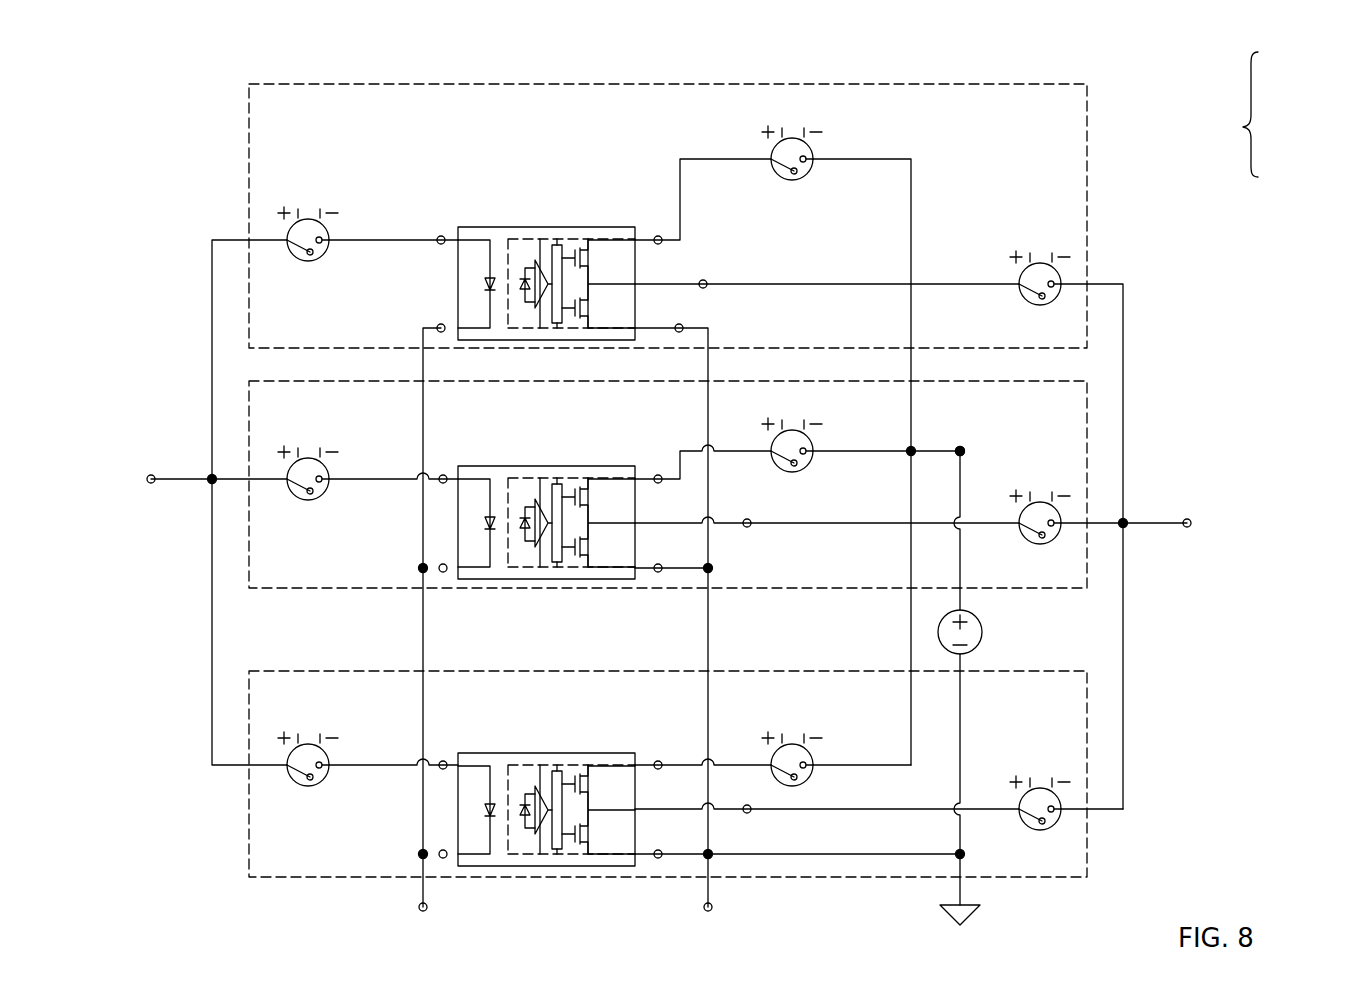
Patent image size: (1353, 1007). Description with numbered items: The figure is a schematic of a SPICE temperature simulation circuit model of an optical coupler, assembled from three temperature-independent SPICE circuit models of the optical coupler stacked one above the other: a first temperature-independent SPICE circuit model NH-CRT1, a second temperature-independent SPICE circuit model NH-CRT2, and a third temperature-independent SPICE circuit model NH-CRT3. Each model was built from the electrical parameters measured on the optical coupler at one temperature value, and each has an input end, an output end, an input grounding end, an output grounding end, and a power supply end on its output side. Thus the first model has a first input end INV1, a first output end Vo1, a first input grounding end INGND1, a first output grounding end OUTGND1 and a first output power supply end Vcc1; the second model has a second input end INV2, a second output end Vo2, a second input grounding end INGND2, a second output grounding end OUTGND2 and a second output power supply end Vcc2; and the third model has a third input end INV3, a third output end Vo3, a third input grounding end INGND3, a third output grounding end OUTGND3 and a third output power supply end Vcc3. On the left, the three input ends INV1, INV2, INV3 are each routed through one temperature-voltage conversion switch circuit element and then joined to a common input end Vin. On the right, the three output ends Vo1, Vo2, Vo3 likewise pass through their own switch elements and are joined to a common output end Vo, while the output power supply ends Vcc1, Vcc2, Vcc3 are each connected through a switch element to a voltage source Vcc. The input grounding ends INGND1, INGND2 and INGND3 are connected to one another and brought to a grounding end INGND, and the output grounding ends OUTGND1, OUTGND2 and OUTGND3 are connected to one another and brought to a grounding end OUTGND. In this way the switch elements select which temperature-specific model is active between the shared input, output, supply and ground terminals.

The first temperature-independent SPICE circuit model NH-CRT1 is at (543, 226).
The second temperature-independent SPICE circuit model NH-CRT2 is at (540, 465).
The third temperature-independent SPICE circuit model NH-CRT3 is at (530, 752).
The first input end INV1 is at (440, 246).
The second input end INV2 is at (442, 484).
The third input end INV3 is at (442, 770).
The first input grounding end INGND1 is at (438, 325).
The second input grounding end INGND2 is at (440, 565).
The third input grounding end INGND3 is at (440, 852).
The first output power supply end Vcc1 is at (657, 235).
The second output power supply end Vcc2 is at (657, 475).
The third output power supply end Vcc3 is at (657, 761).
The first output end Vo1 is at (704, 280).
The second output end Vo2 is at (748, 528).
The third output end Vo3 is at (748, 813).
The first output grounding end OUTGND1 is at (681, 323).
The second output grounding end OUTGND2 is at (659, 573).
The third output grounding end OUTGND3 is at (657, 859).
The input end Vin is at (151, 474).
The voltage source Vcc is at (961, 446).
The output end Vo is at (1187, 518).
The grounding end INGND is at (423, 912).
The grounding end OUTGND is at (709, 912).